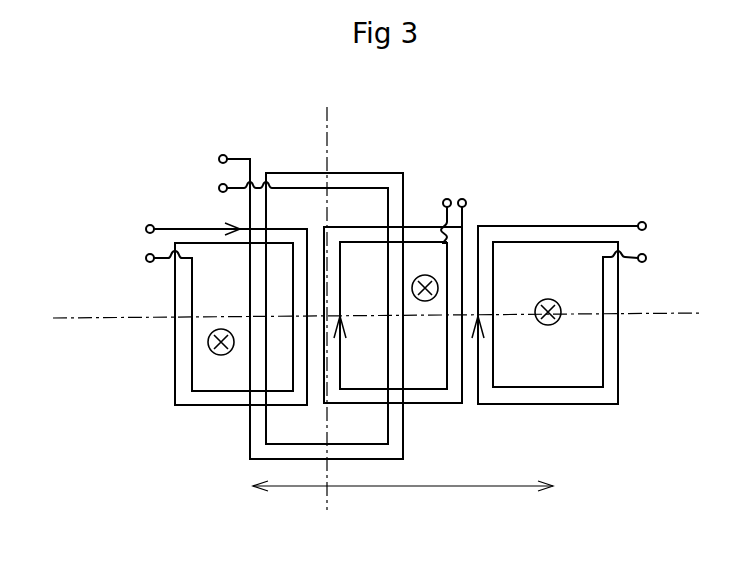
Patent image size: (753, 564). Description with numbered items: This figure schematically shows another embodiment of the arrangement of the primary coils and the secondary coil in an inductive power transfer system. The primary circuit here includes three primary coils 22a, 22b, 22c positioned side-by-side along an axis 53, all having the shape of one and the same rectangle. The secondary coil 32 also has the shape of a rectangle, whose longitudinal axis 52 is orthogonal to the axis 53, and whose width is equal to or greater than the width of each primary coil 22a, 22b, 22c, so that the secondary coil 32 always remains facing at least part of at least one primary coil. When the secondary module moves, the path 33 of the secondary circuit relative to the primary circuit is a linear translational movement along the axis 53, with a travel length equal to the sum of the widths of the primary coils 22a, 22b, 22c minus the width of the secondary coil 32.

The secondary coil 32 is at (372, 173).
The primary coil 22a is at (557, 226).
The primary coil 22b is at (433, 405).
The primary coil 22c is at (187, 228).
The path 33 is at (412, 487).
The longitudinal axis 52 is at (325, 141).
The axis 53 is at (65, 318).